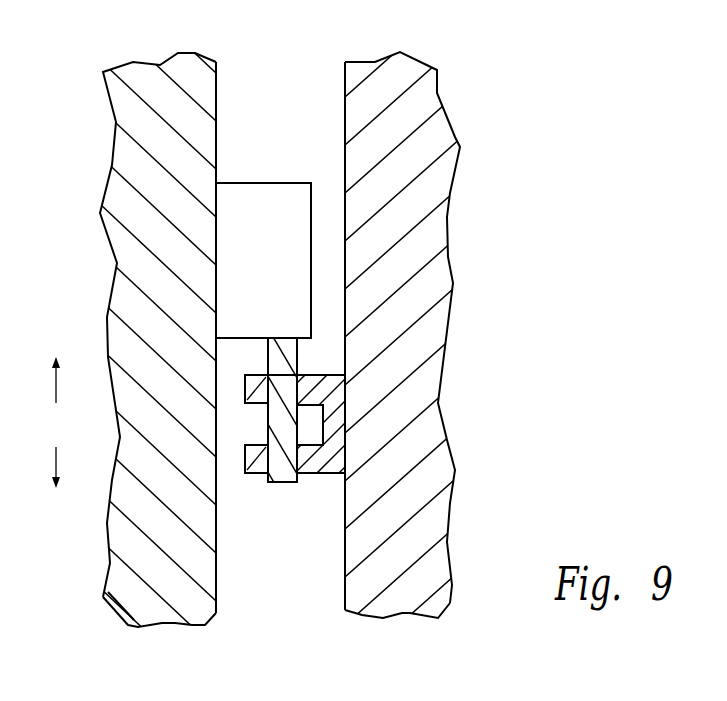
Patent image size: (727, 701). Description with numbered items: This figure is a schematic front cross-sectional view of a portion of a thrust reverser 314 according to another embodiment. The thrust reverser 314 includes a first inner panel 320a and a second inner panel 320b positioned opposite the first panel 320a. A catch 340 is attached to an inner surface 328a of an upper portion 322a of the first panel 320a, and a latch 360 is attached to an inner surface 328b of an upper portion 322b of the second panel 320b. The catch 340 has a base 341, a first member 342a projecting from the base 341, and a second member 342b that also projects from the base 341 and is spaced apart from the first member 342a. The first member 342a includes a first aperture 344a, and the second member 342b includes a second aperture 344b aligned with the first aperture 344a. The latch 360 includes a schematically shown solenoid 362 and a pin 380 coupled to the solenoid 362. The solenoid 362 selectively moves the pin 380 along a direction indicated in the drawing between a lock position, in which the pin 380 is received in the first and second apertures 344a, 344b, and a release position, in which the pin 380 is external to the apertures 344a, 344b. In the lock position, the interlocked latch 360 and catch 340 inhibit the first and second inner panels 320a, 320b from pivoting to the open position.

The thrust reverser 314 is at (468, 66).
The first inner panel 320a is at (418, 386).
The second inner panel 320b is at (126, 213).
The upper portion of the first panel 322a is at (425, 560).
The upper portion of the second panel 322b is at (138, 550).
The inner surface of the upper portion of the first panel 328a is at (343, 592).
The inner surface of the upper portion of the second panel 328b is at (218, 588).
The catch 340 is at (318, 483).
The base 341 is at (338, 431).
The first member 342a is at (256, 386).
The second member 342b is at (253, 465).
The first aperture 344a is at (267, 375).
The second aperture 344b is at (266, 444).
The latch 360 is at (324, 283).
The solenoid 362 is at (258, 183).
The pin 380 is at (280, 483).